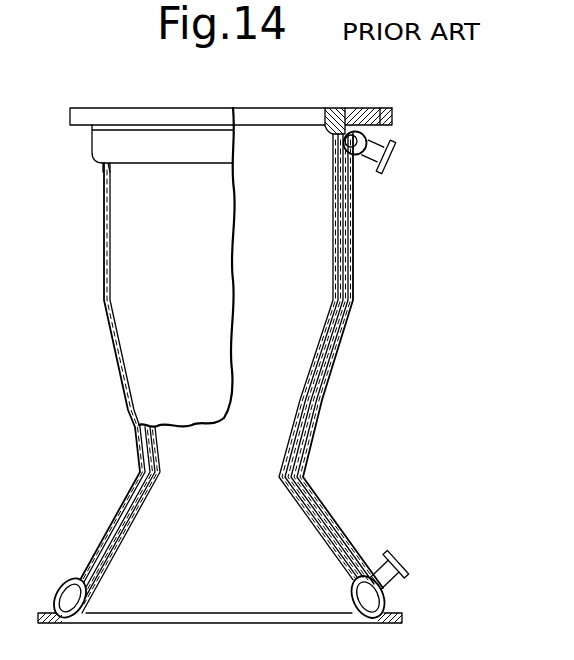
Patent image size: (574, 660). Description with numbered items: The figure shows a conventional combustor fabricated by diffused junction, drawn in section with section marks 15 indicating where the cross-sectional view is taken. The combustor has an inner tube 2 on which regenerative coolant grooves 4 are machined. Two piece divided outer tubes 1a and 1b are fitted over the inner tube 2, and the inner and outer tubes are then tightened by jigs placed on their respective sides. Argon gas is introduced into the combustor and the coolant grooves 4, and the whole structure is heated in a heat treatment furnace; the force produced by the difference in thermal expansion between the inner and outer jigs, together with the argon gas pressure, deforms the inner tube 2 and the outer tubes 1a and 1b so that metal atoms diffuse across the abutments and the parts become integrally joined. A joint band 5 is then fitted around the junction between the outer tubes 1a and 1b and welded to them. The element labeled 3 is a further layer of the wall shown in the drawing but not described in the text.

The outer tube 1a is at (343, 248).
The outer tube 1b is at (138, 287).
The inner tube 2 is at (136, 518).
The outer wall layer 3 is at (300, 471).
The regenerative coolant grooves 4 is at (338, 360).
The joint band 5 is at (110, 351).
The section line XV-XV 15 is at (27, 195).